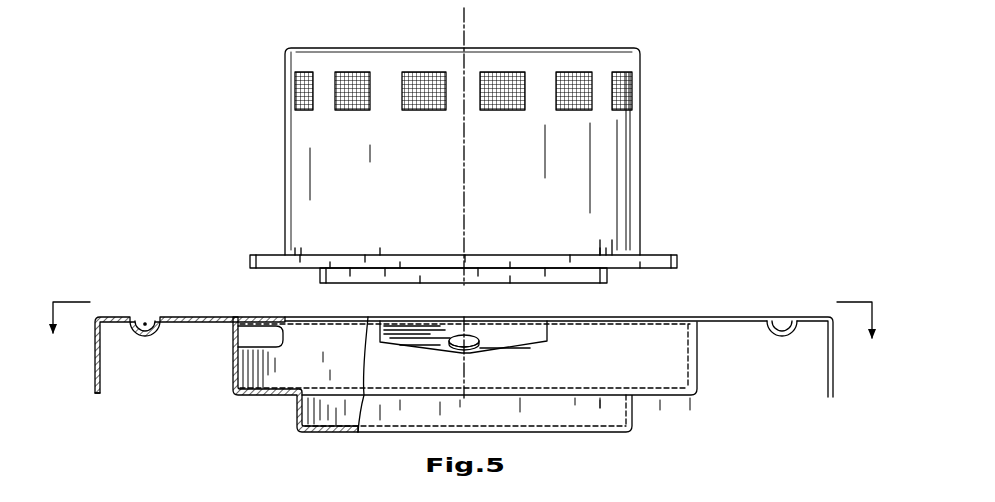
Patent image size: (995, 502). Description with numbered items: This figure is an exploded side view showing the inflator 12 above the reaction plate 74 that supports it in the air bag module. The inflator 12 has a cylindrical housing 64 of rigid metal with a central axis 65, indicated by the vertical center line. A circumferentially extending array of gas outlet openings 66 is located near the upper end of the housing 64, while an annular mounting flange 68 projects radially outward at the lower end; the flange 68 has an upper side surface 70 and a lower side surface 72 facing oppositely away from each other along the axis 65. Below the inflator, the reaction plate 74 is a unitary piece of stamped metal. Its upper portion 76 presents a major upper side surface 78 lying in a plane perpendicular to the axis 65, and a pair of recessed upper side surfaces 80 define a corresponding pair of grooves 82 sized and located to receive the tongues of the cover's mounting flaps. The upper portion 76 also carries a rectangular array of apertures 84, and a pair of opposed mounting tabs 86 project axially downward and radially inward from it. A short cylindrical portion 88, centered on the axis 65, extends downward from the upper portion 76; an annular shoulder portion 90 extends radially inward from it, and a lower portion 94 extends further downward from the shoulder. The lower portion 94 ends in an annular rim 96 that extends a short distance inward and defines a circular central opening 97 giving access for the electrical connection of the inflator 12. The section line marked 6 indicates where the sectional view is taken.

The section line 6- 6 is at (463, 332).
The inflator 12 is at (277, 74).
The cylindrical housing 64 is at (298, 163).
The central axis 65 is at (462, 22).
The gas outlet openings 66 is at (515, 70).
The annular mounting flange 68 is at (608, 251).
The upper side surface 70 is at (658, 257).
The lower side surface 72 is at (658, 270).
The reaction plate 74 is at (235, 398).
The upper portion 76 is at (115, 315).
The major upper side surface 78 is at (248, 316).
The recessed upper side surfaces 80 is at (145, 313).
The grooves 82 is at (150, 313).
The apertures 84 is at (202, 325).
The mounting tabs 86 is at (517, 348).
The cylindrical portion 88 is at (233, 358).
The annular shoulder portion 90 is at (270, 396).
The lower portion 94 is at (303, 432).
The annular rim 96 is at (316, 433).
The circular central opening 97 is at (398, 438).